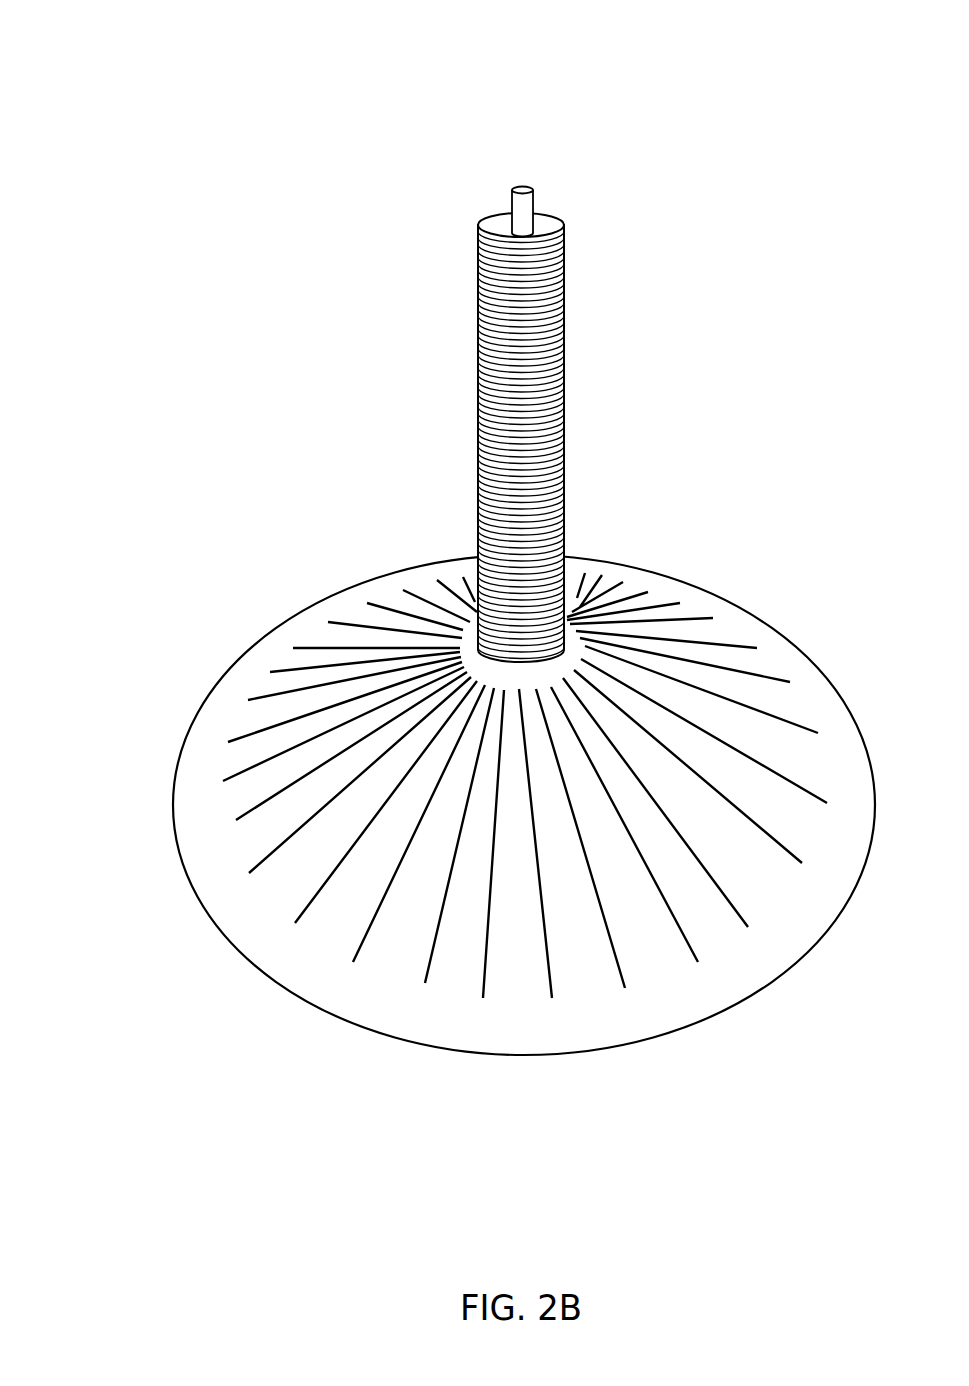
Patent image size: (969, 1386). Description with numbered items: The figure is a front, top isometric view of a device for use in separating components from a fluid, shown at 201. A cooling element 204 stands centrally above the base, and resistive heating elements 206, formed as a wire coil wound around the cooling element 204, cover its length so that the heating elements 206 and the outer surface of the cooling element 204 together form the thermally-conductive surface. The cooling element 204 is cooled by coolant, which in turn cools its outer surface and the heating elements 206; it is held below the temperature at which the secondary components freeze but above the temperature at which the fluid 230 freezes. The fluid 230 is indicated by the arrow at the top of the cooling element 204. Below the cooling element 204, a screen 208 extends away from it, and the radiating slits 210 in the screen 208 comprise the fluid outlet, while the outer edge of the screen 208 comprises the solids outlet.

The device for use in separating components from a fluid 201 is at (150, 57).
The cooling element 204 is at (489, 226).
The resistive heating elements 206 is at (478, 246).
The screen 208 is at (279, 631).
The slits 210 is at (394, 605).
The fluid 230 is at (524, 160).